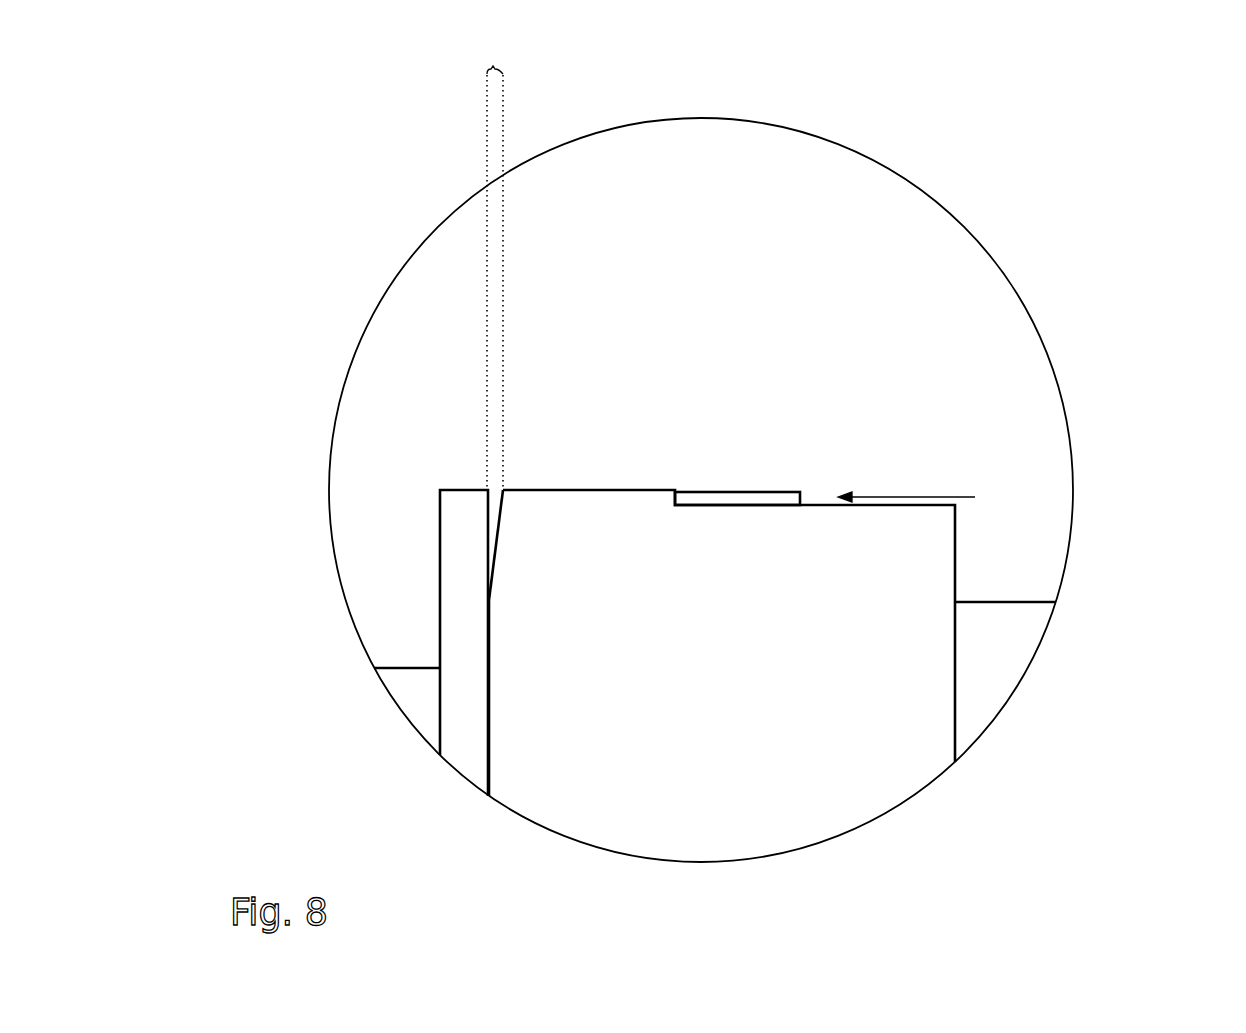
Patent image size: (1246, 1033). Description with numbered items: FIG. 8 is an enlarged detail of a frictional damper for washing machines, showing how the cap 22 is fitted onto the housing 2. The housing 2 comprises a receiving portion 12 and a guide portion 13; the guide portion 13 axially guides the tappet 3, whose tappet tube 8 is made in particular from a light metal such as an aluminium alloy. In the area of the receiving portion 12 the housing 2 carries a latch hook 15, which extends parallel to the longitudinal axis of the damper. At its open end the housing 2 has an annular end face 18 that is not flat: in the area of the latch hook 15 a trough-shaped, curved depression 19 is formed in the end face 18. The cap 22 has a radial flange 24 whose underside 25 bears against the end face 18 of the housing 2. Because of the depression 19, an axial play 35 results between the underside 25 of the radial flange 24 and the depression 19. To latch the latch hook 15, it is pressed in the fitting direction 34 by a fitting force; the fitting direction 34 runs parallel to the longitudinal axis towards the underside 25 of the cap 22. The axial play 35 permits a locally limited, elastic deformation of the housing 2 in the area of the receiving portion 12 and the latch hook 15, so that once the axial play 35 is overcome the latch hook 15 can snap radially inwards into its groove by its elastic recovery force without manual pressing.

The housing 2 is at (1009, 597).
The tappet 3 is at (403, 667).
The tappet tube 8 is at (408, 689).
The receiving portion 12 is at (645, 522).
The guide portion 13 is at (1013, 671).
The latch hook 15 is at (755, 500).
The end face 18 is at (486, 739).
The depression 19 is at (498, 540).
The cap 22 is at (438, 587).
The radial flange 24 is at (455, 633).
The underside 25 is at (490, 513).
The fitting direction 34 is at (878, 497).
The axial play 35 is at (498, 262).